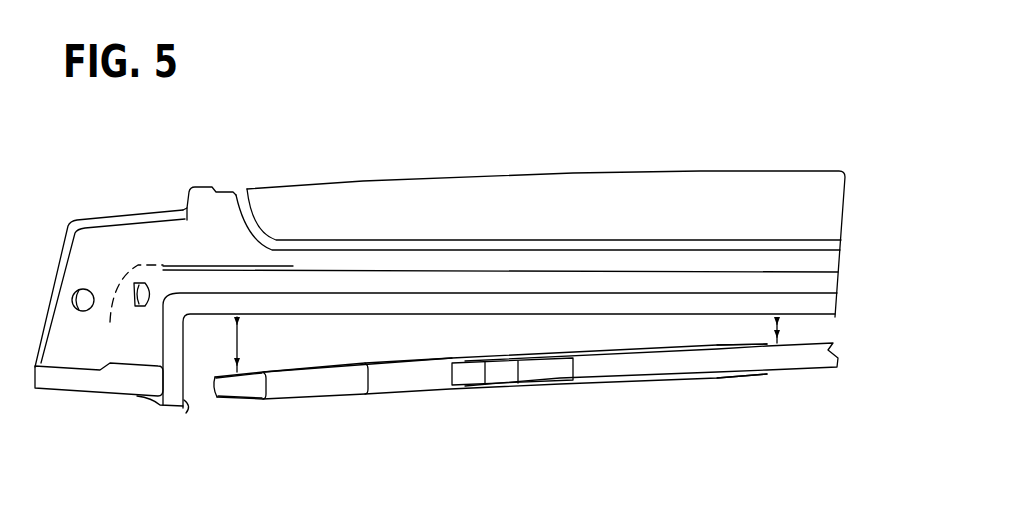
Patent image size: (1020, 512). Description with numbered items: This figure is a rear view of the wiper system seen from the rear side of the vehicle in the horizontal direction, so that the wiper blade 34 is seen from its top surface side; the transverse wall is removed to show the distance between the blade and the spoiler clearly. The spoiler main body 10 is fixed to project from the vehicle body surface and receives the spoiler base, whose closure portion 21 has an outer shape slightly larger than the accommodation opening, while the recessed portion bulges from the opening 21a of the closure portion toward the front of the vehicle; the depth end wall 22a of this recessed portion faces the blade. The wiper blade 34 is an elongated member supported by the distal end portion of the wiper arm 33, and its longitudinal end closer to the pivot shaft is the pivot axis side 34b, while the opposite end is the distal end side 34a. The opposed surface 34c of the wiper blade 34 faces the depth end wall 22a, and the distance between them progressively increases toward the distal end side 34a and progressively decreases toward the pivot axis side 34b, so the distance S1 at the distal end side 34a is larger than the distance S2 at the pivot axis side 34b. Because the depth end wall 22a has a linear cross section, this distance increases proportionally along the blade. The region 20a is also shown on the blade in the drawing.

The spoiler main body 10 is at (575, 182).
The depth end wall 22a is at (453, 318).
The closure portion 21 is at (172, 403).
The opening of the closure portion 21a is at (187, 404).
The wiper blade 34 is at (402, 388).
The distal end side 34a is at (253, 393).
The pivot axis side 34b is at (737, 373).
The opposed surface 34c is at (305, 363).
The wiper arm 33 is at (790, 358).
The protrusions 20a is at (537, 340).
The distance at the distal end side S1 is at (237, 337).
The distance at the pivot axis side S2 is at (778, 334).